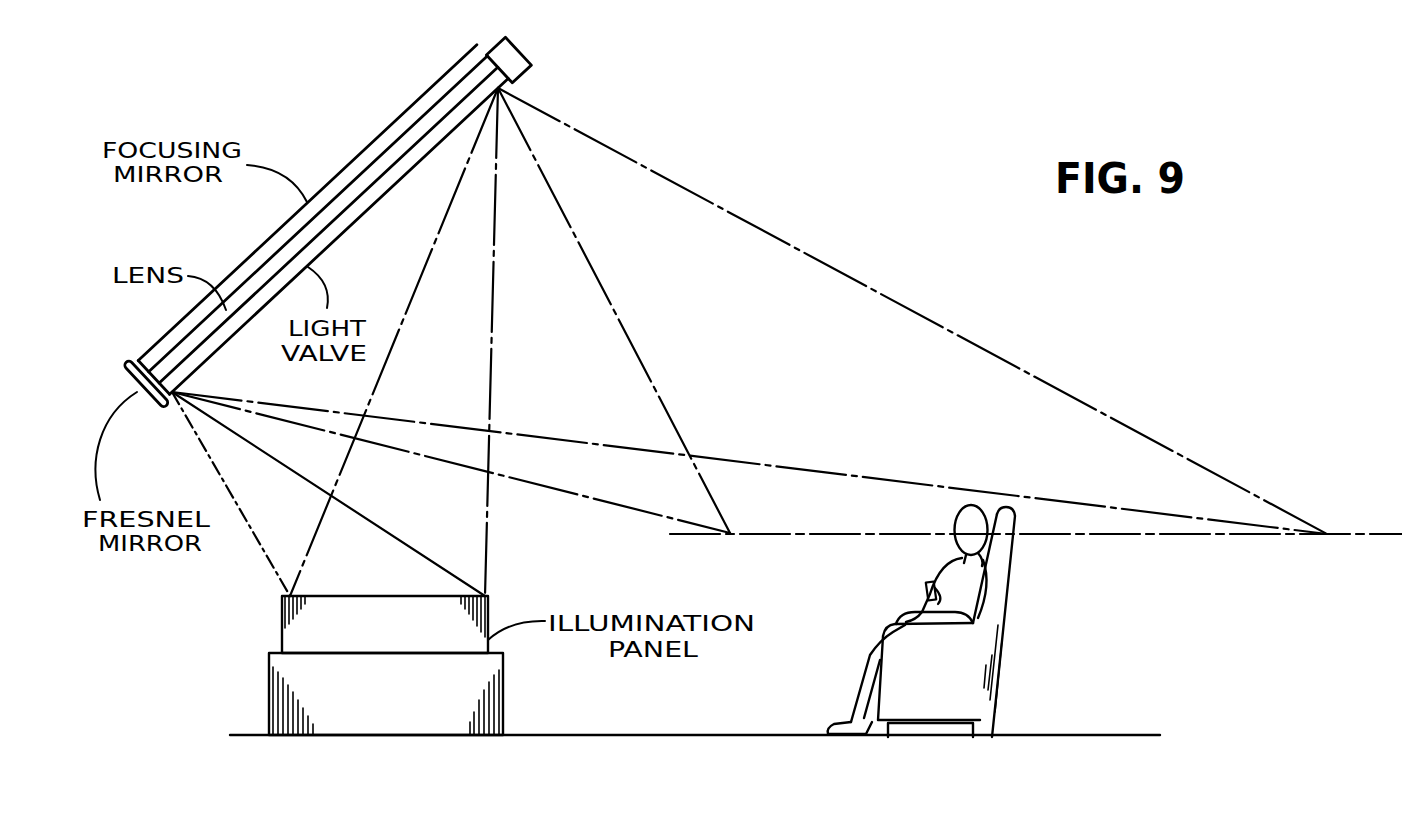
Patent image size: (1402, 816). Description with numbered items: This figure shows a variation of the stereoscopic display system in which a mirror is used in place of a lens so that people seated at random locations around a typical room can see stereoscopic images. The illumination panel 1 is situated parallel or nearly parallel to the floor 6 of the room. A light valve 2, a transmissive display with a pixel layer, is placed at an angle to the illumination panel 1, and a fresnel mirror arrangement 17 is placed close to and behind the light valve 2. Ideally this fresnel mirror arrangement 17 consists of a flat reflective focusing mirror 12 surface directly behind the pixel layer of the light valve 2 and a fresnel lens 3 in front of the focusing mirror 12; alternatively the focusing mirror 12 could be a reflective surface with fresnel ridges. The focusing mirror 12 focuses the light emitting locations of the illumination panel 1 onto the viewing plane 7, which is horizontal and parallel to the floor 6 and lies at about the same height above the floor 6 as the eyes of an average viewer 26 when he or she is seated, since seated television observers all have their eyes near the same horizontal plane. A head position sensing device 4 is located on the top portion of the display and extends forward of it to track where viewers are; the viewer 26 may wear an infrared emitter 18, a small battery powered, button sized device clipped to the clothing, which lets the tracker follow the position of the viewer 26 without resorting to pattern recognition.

The illumination panel 1 is at (352, 553).
The light valve 2 is at (367, 203).
The fresnel lens 3 is at (370, 172).
The head position sensing device 4 is at (525, 58).
The floor 6 is at (1110, 735).
The viewing plane 7 is at (1340, 536).
The focusing mirror 12 is at (262, 250).
The fresnel mirror arrangement 17 is at (133, 397).
The infrared emitter 18 is at (928, 590).
The viewer 26 is at (957, 518).